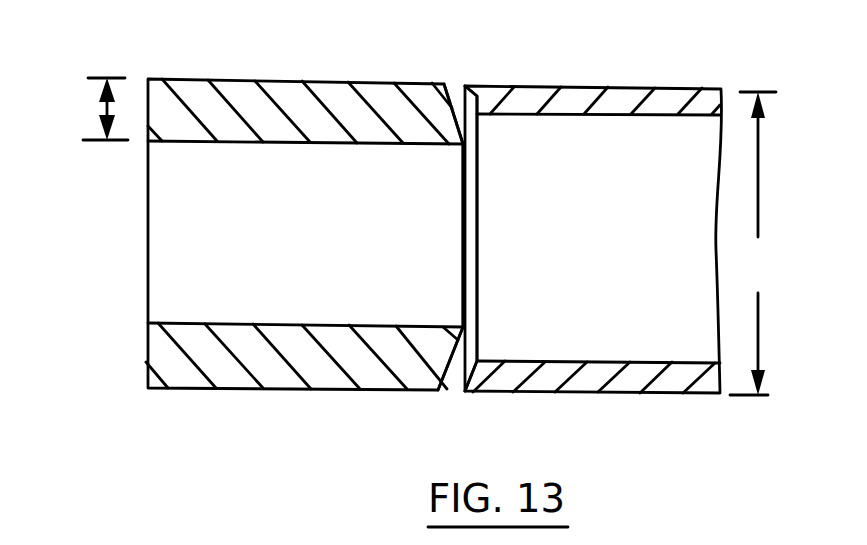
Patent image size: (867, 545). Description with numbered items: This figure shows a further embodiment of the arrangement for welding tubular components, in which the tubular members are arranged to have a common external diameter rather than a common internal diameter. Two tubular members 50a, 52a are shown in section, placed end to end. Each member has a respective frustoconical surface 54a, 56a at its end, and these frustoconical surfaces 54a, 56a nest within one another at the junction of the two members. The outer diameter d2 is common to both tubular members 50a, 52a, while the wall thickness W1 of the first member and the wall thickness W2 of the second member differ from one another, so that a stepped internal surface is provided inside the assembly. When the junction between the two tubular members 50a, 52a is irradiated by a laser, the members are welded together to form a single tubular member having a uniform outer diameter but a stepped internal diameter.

The tubular member 50a is at (195, 60).
The tubular member 52a is at (589, 64).
The frustoconical surface 54a is at (451, 107).
The frustoconical surface 56a is at (479, 98).
The wall thickness W1 is at (100, 110).
The wall thickness W2 is at (718, 108).
The outer diameter d2 is at (755, 243).